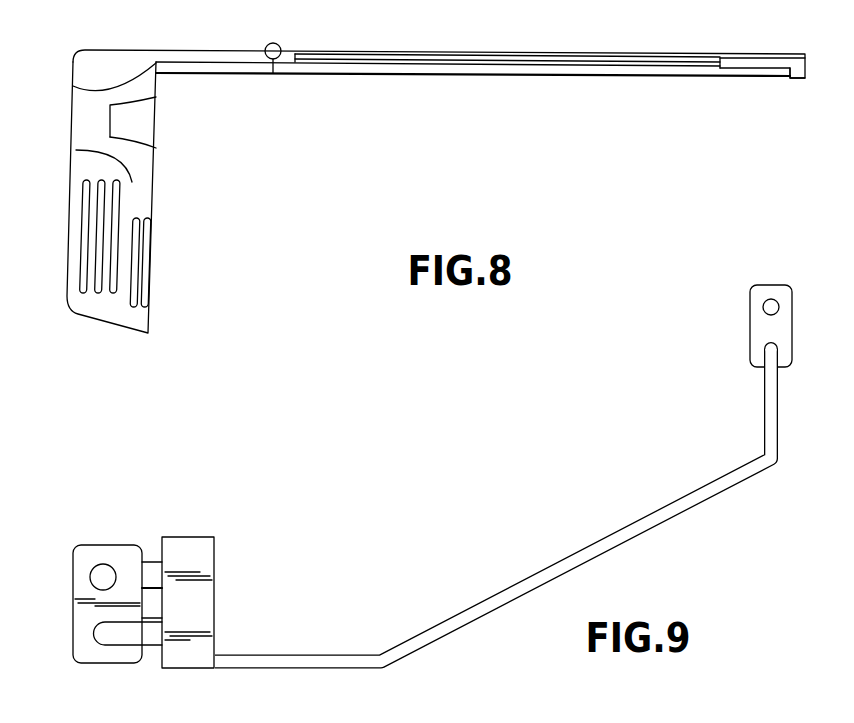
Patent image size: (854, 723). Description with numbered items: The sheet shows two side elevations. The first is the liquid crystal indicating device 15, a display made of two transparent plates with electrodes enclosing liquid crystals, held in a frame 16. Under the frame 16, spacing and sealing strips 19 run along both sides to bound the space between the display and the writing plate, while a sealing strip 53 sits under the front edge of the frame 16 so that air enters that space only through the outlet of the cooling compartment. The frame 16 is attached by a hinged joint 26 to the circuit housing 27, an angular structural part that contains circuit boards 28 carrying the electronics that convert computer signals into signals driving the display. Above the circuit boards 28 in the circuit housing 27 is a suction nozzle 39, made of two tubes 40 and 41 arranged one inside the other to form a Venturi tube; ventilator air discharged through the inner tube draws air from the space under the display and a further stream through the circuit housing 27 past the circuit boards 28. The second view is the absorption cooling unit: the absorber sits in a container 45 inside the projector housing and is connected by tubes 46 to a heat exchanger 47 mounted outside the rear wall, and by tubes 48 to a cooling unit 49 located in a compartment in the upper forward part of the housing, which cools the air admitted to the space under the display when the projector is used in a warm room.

In FIG. 8, the liquid crystal indicating device 15 is at (433, 60).
In FIG. 8, the frame 16 is at (758, 66).
In FIG. 8, the spacing and sealing strips 19 is at (257, 77).
In FIG. 8, the hinged joint 26 is at (280, 46).
In FIG. 8, the circuit housing 27 is at (86, 303).
In FIG. 8, the circuit boards 28 is at (102, 227).
In FIG. 8, the suction nozzle 39 is at (106, 119).
In FIG. 8, the tube 40 is at (142, 141).
In FIG. 8, the tube 41 is at (118, 83).
In FIG. 8, the sealing strip 53 is at (797, 83).
In FIG. 9, the container 45 is at (187, 552).
In FIG. 9, the tubes 46 is at (153, 562).
In FIG. 9, the heat exchanger 47 is at (105, 545).
In FIG. 9, the tubes 48 is at (747, 462).
In FIG. 9, the cooling unit 49 is at (770, 325).